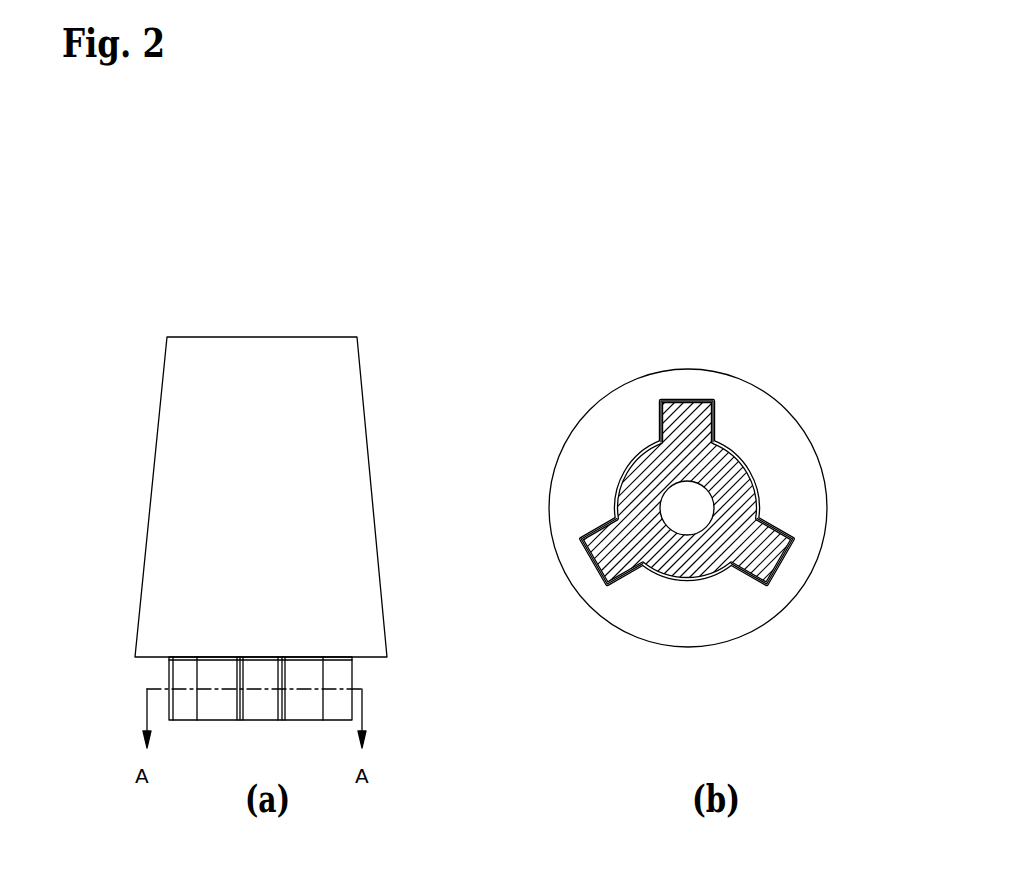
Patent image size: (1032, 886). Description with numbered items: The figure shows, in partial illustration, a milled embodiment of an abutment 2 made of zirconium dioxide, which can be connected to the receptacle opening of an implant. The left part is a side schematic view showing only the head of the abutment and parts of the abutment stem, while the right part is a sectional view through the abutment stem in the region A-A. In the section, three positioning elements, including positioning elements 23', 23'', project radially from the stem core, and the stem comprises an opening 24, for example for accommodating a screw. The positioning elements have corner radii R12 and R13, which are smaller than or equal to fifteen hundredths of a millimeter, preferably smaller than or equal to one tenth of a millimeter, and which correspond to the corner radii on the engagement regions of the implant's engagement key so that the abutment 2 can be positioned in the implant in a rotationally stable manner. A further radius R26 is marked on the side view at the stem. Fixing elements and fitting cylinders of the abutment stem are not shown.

The abutment 2 is at (252, 482).
The positioning element 23' is at (816, 557).
The positioning element 23'' is at (574, 578).
The opening 24 is at (667, 503).
The corner radius R12 is at (660, 403).
The corner radius R13 is at (715, 443).
The lobe edge radius R26 is at (168, 658).